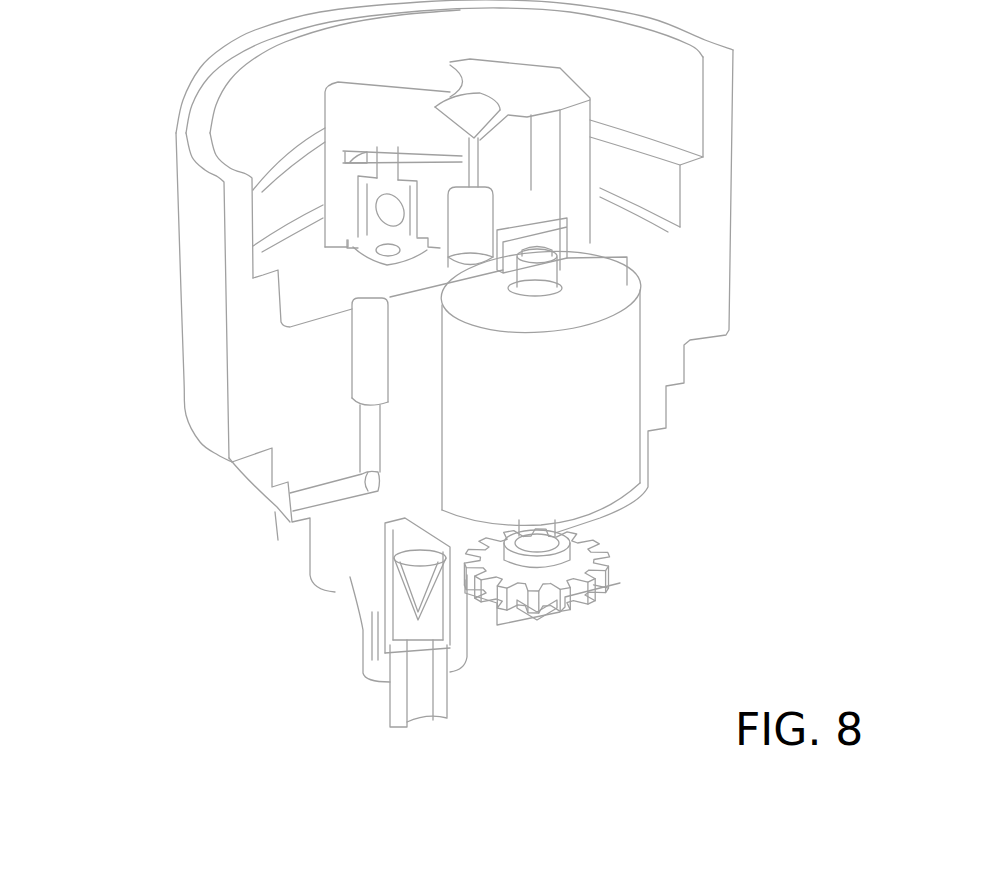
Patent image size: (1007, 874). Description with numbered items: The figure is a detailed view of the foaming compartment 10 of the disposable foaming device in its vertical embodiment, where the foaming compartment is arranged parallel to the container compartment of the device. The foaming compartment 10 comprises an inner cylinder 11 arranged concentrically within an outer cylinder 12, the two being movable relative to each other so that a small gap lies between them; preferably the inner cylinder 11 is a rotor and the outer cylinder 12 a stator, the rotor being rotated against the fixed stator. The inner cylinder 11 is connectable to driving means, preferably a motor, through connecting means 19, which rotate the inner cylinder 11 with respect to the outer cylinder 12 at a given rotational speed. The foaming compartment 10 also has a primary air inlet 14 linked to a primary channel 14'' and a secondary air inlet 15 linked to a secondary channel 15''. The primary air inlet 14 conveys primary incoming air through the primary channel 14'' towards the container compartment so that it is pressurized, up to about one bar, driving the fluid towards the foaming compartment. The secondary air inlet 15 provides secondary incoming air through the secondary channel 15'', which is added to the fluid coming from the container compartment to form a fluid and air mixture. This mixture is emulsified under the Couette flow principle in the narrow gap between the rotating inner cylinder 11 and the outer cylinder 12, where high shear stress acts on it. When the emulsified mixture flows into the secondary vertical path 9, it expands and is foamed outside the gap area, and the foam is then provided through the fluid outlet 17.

The secondary vertical path 9 is at (442, 533).
The foaming compartment 10 is at (742, 222).
The inner cylinder 11 is at (607, 403).
The outer cylinder 12 is at (655, 310).
The primary air inlet 14 is at (234, 493).
The primary channel 14'' is at (225, 385).
The secondary air inlet 15 is at (276, 211).
The secondary channel 15'' is at (258, 149).
The fluid outlet 17 is at (410, 707).
The connecting means 19 is at (595, 572).